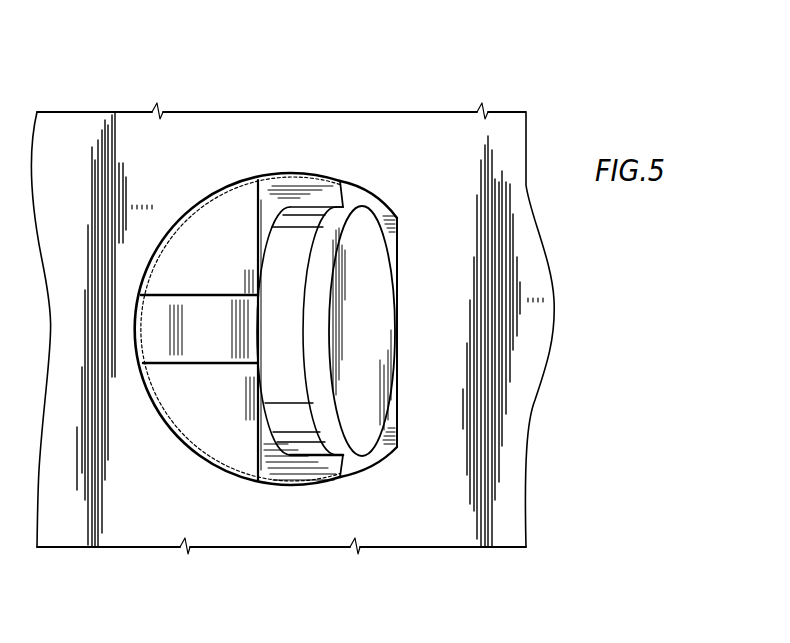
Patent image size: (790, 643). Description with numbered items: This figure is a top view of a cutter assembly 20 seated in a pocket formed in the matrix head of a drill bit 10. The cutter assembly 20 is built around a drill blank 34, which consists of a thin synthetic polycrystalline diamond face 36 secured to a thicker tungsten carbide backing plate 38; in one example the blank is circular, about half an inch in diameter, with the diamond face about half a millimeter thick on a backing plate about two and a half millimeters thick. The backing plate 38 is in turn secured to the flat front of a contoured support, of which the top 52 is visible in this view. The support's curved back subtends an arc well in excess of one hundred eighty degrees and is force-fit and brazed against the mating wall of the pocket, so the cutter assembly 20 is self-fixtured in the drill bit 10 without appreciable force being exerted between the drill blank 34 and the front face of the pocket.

The drill bit 10 is at (438, 130).
The cutter assembly 20 is at (398, 305).
The drill blank 34 is at (363, 205).
The synthetic polycrystalline diamond face 36 is at (380, 347).
The tungsten carbide backing plate 38 is at (278, 340).
The top 52 is at (219, 278).